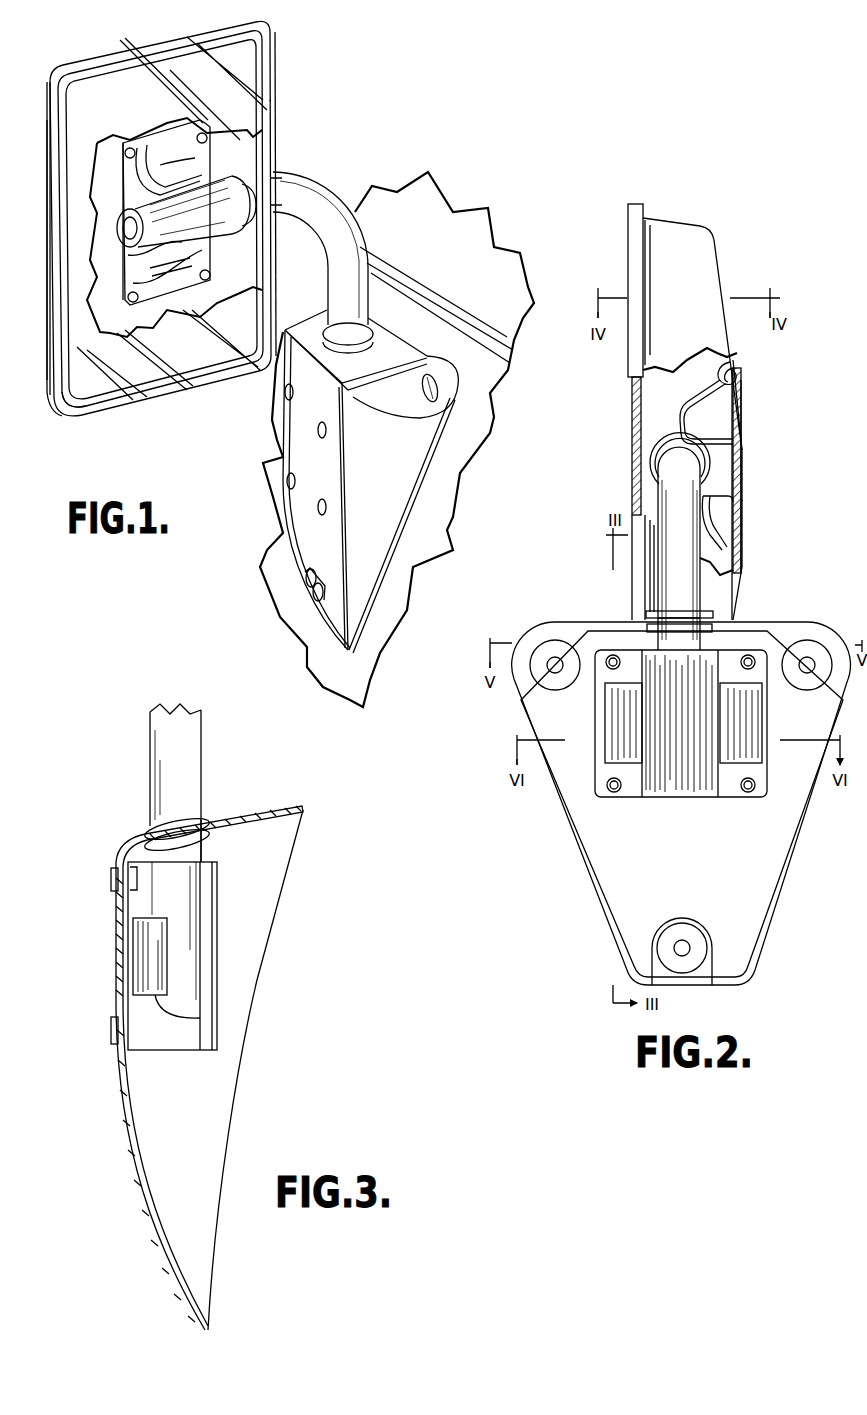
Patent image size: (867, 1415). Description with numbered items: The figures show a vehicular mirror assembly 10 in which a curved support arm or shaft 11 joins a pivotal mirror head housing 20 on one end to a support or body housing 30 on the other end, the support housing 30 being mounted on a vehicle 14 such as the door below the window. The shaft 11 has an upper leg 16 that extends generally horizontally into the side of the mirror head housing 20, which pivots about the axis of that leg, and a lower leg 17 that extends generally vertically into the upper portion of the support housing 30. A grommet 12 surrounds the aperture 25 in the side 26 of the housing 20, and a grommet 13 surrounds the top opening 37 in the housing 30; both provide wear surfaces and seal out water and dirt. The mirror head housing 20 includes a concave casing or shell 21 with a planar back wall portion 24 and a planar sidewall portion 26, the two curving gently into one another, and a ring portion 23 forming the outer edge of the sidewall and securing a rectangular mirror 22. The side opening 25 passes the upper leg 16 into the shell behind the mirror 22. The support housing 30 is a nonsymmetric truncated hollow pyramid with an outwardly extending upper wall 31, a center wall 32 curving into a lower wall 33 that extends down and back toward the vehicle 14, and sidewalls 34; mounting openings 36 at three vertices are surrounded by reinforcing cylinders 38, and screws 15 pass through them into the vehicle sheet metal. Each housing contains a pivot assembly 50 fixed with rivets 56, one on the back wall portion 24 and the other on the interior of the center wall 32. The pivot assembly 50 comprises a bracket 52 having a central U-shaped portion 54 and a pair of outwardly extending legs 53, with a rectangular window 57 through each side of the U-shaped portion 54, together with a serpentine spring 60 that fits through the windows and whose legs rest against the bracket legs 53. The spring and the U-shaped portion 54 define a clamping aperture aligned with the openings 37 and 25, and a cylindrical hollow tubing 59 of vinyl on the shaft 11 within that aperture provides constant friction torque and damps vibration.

In FIG. 1, the vehicular mirror assembly 10 is at (307, 57).
In FIG. 2, the vehicular mirror assembly 10 is at (780, 490).
In FIG. 1, the support arm or shaft 11 is at (378, 262).
In FIG. 2, the support arm or shaft 11 is at (712, 548).
In FIG. 3, the support arm or shaft 11 is at (177, 852).
In FIG. 1, the grommet 12 is at (240, 183).
In FIG. 1, the grommet 13 is at (371, 338).
In FIG. 2, the grommet 13 is at (714, 613).
In FIG. 3, the grommet 13 is at (145, 832).
In FIG. 1, the vehicle 14 is at (463, 447).
In FIG. 1, the screws 15 is at (311, 595).
In FIG. 1, the upper leg 16 is at (283, 175).
In FIG. 1, the lower leg 17 is at (353, 228).
In FIG. 2, the lower leg 17 is at (666, 540).
In FIG. 3, the lower leg 17 is at (150, 766).
In FIG. 1, the mirror head housing 20 is at (85, 45).
In FIG. 2, the mirror head housing 20 is at (700, 394).
In FIG. 1, the casing or shell 21 is at (46, 134).
In FIG. 2, the casing or shell 21 is at (735, 293).
In FIG. 1, the mirror 22 is at (178, 68).
In FIG. 1, the ring portion 23 is at (68, 404).
In FIG. 2, the ring portion 23 is at (633, 204).
In FIG. 2, the back wall portion 24 is at (741, 447).
In FIG. 1, the side opening 25 is at (243, 228).
In FIG. 1, the sidewall portion 26 is at (56, 310).
In FIG. 2, the sidewall portion 26 is at (697, 310).
In FIG. 1, the support housing 30 is at (343, 481).
In FIG. 2, the support housing 30 is at (673, 786).
In FIG. 3, the support housing 30 is at (181, 1052).
In FIG. 1, the upper wall 31 is at (371, 364).
In FIG. 3, the upper wall 31 is at (265, 812).
In FIG. 1, the center wall 32 is at (292, 420).
In FIG. 3, the center wall 32 is at (115, 956).
In FIG. 1, the lower wall 33 is at (296, 511).
In FIG. 3, the lower wall 33 is at (138, 1199).
In FIG. 1, the sidewalls 34 is at (366, 503).
In FIG. 2, the mounting openings 36 is at (555, 658).
In FIG. 2, the top opening 37 is at (674, 609).
In FIG. 3, the top opening 37 is at (206, 810).
In FIG. 2, the reinforcing cylinders 38 is at (810, 648).
In FIG. 1, the pivot assembly 50 is at (131, 199).
In FIG. 2, the pivot assembly 50 is at (654, 585).
In FIG. 3, the pivot assembly 50 is at (190, 962).
In FIG. 1, the bracket 52 is at (117, 266).
In FIG. 2, the bracket 52 is at (654, 438).
In FIG. 3, the bracket 52 is at (221, 943).
In FIG. 1, the legs 53 is at (211, 146).
In FIG. 2, the legs 53 is at (731, 366).
In FIG. 1, the U-shaped portion 54 is at (120, 214).
In FIG. 2, the U-shaped portion 54 is at (650, 482).
In FIG. 3, the U-shaped portion 54 is at (192, 1052).
In FIG. 1, the rivets 56 is at (127, 148).
In FIG. 2, the rivets 56 is at (613, 655).
In FIG. 3, the rivets 56 is at (110, 881).
In FIG. 3, the window 57 is at (200, 1018).
In FIG. 1, the cylindrical hollow tubing 59 is at (122, 234).
In FIG. 3, the cylindrical hollow tubing 59 is at (166, 977).
In FIG. 2, the spring 60 is at (697, 400).